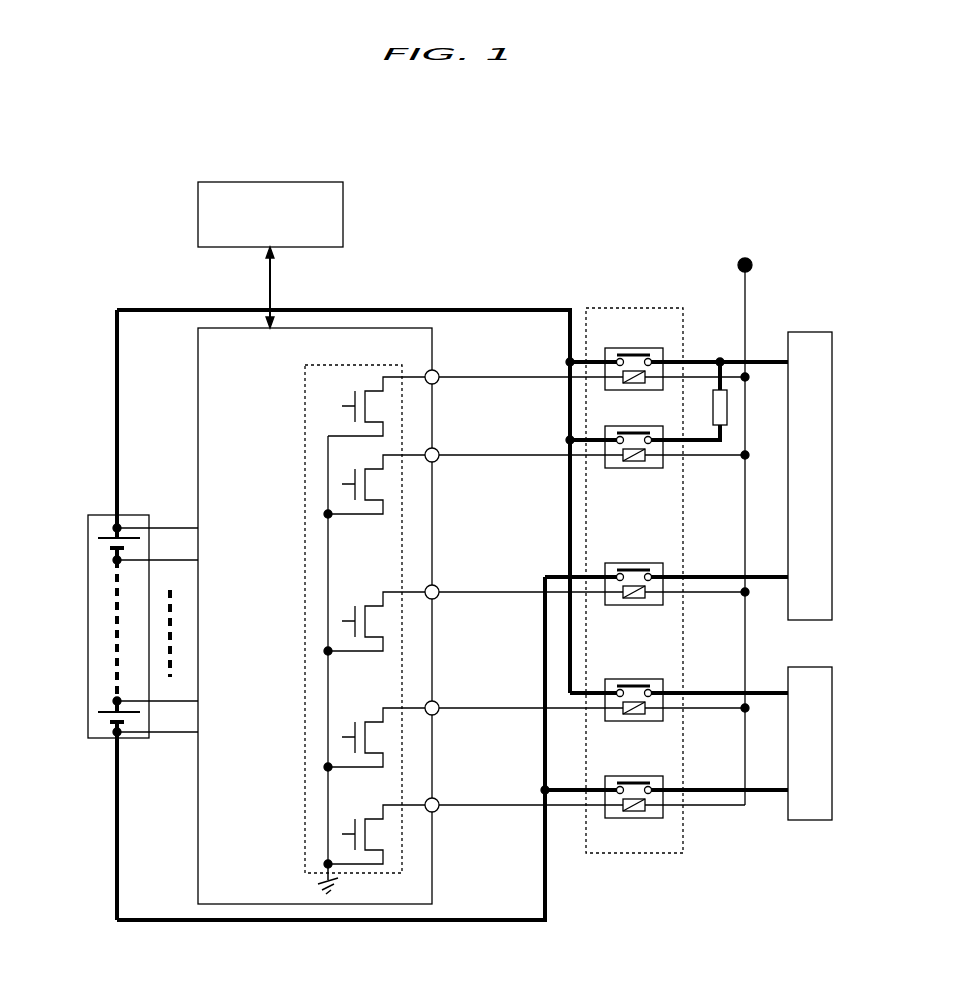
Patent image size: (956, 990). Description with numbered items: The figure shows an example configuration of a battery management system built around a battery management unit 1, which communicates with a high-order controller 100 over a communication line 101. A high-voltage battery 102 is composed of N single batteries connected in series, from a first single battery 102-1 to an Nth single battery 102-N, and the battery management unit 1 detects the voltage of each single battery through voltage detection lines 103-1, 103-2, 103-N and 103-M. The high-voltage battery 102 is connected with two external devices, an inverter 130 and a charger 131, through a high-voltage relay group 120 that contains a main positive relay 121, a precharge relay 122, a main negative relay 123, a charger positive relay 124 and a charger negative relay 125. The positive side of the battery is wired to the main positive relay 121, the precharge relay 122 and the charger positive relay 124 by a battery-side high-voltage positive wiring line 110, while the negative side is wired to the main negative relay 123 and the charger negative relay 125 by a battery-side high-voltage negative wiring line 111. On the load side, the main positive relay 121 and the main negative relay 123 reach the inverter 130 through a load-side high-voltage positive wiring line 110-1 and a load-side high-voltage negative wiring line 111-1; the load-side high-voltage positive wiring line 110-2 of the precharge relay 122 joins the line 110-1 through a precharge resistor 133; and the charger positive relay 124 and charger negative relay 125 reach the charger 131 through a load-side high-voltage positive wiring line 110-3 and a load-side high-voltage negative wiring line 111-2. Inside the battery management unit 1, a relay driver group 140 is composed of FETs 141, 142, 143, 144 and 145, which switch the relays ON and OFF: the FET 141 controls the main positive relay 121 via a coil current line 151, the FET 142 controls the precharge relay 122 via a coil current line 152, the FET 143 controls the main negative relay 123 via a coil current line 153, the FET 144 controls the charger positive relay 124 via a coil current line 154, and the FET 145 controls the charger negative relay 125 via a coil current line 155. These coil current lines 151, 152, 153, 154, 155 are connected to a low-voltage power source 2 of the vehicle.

The battery management unit 1 is at (352, 328).
The low-voltage power source 2 is at (752, 260).
The high-order controller 100 is at (343, 213).
The communication line 101 is at (275, 300).
The high-voltage battery 102 is at (130, 515).
The single battery 102-1 is at (100, 546).
The single battery 102-N is at (100, 722).
The voltage detection line 103-1 is at (175, 528).
The voltage detection line 103-2 is at (175, 560).
The voltage detection line 103-N is at (175, 700).
The voltage detection line 103-M is at (175, 732).
The battery-side high-voltage positive wiring line 110 is at (140, 310).
The battery-side high-voltage negative wiring line 111 is at (172, 922).
The load-side high-voltage positive wiring line 110-1 is at (730, 335).
The load-side high-voltage positive wiring line 110-2 is at (700, 440).
The load-side high-voltage positive wiring line 110-3 is at (730, 666).
The load-side high-voltage negative wiring line 111-1 is at (730, 550).
The load-side high-voltage negative wiring line 111-2 is at (730, 763).
The high-voltage relay group 120 is at (675, 308).
The main positive relay 121 is at (648, 348).
The precharge relay 122 is at (640, 469).
The main negative relay 123 is at (648, 563).
The charger positive relay 124 is at (648, 679).
The charger negative relay 125 is at (648, 776).
The inverter 130 is at (800, 332).
The charger 131 is at (800, 667).
The precharge resistor 133 is at (727, 415).
The relay driver group 140 is at (303, 433).
The FET 141 is at (372, 412).
The FET 142 is at (372, 490).
The FET 143 is at (372, 627).
The FET 144 is at (372, 743).
The FET 145 is at (372, 840).
The coil current line 151 is at (528, 379).
The coil current line 152 is at (528, 457).
The coil current line 153 is at (528, 594).
The coil current line 154 is at (528, 710).
The coil current line 155 is at (528, 807).